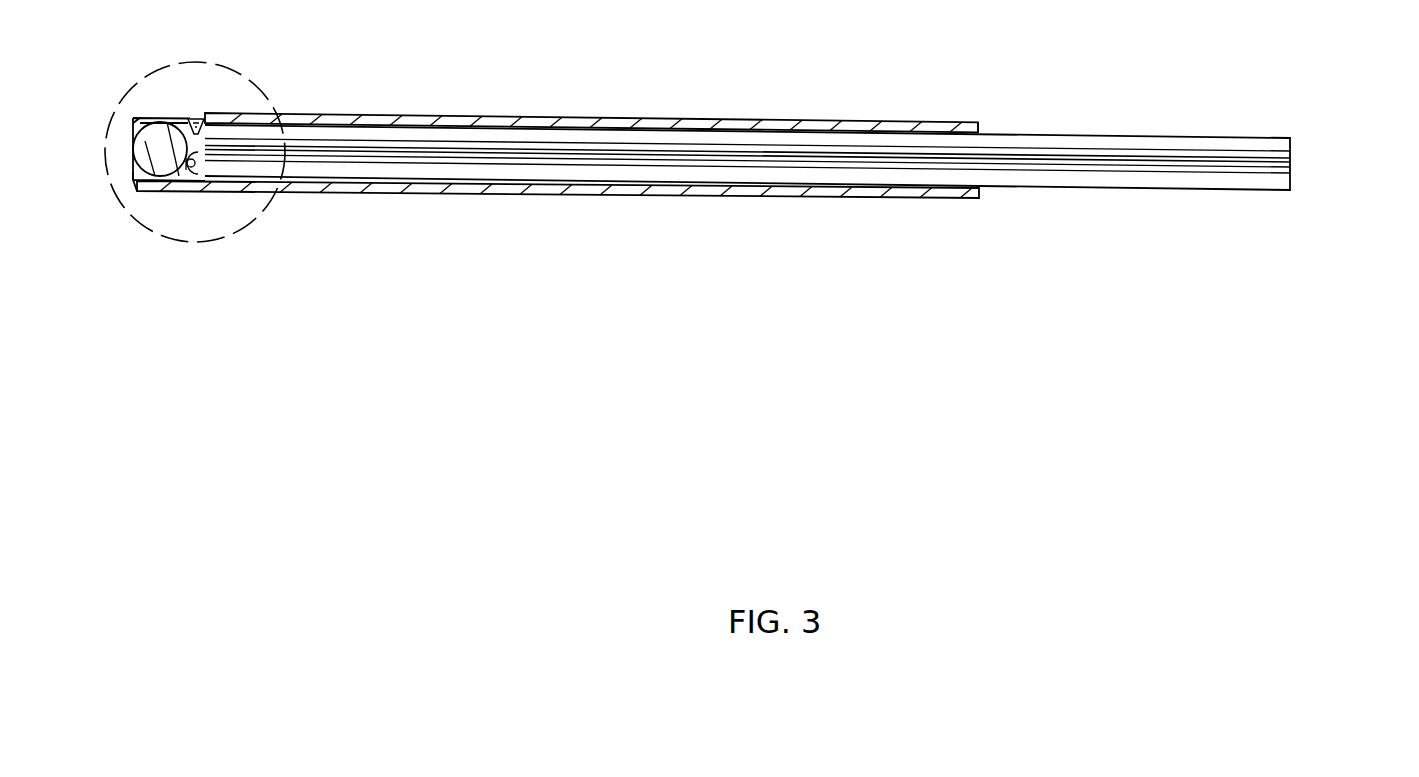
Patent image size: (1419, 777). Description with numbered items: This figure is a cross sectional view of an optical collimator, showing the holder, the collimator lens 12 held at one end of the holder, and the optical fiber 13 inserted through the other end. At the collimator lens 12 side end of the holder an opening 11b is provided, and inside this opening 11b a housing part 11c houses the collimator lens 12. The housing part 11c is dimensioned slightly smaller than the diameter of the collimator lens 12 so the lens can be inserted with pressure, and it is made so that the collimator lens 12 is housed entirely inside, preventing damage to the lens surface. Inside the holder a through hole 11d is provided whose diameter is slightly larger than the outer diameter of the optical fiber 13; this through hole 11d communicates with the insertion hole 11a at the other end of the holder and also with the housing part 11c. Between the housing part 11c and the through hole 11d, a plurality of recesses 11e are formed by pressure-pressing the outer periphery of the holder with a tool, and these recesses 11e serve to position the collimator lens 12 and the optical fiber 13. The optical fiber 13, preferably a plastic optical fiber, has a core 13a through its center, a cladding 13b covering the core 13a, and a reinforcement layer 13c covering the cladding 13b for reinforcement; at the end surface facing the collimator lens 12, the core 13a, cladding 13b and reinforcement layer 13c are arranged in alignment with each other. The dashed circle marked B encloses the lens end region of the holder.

The insertion hole 11a is at (990, 125).
The opening 11b is at (134, 134).
The housing part 11c is at (128, 185).
The through hole 11d is at (648, 118).
The recesses 11e is at (197, 120).
The collimator lens 12 is at (168, 171).
The optical fiber 13 is at (805, 149).
The core 13a is at (780, 172).
The cladding 13b is at (1290, 158).
The reinforcement layer 13c is at (1290, 138).
The enlarged region B is at (231, 71).